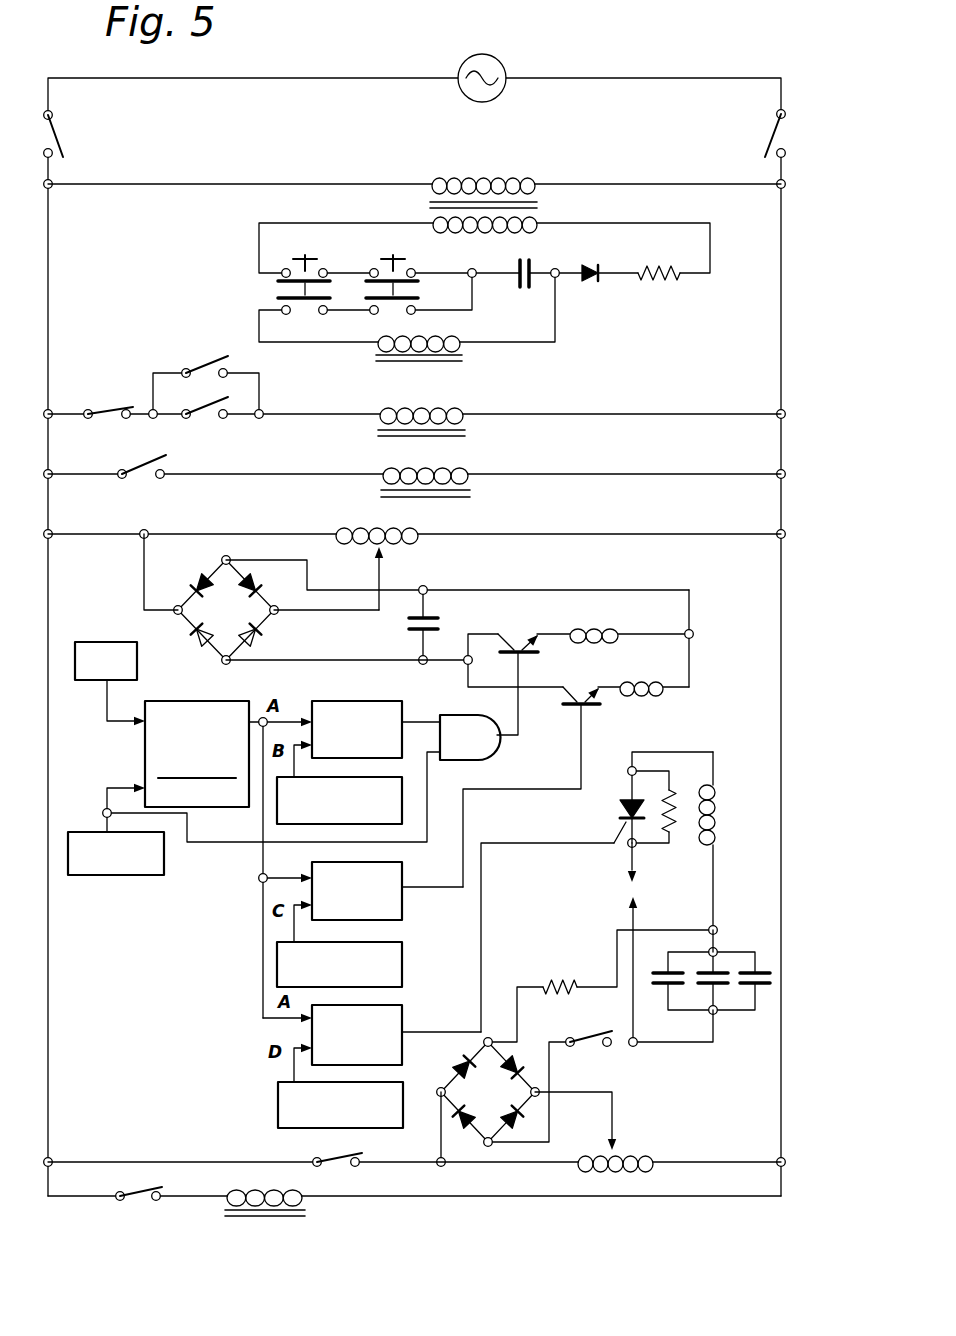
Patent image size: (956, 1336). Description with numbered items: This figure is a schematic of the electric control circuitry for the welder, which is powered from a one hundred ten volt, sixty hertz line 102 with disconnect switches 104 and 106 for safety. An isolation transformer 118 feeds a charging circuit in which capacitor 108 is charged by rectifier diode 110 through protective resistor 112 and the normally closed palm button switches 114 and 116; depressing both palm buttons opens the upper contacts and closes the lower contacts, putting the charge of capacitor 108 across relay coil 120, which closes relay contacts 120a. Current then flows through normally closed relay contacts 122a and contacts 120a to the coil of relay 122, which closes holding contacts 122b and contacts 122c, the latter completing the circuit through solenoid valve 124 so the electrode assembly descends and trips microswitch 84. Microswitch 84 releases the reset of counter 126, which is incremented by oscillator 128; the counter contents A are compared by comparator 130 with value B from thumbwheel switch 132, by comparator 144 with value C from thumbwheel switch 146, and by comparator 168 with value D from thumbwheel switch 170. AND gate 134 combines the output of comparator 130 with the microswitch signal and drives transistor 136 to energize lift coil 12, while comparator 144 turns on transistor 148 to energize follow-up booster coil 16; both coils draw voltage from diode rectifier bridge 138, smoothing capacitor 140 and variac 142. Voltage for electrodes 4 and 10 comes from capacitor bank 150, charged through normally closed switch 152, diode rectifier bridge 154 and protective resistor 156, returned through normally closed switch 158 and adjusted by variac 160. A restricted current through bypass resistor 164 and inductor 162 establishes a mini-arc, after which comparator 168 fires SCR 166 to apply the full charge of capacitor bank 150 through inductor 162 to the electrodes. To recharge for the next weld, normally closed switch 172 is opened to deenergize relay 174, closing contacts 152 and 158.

The 110 volt, 60 hertz line 102 is at (500, 62).
The disconnect switch 104 is at (56, 136).
The disconnect switch 106 is at (766, 132).
The isolation transformer 118 is at (540, 208).
The palm button switch 114 is at (310, 258).
The palm button switch 116 is at (400, 262).
The capacitor 108 is at (535, 288).
The rectifier diode 110 is at (590, 284).
The protective resistor 112 is at (668, 270).
The relay coil 120 is at (465, 353).
The relay contacts 120a is at (206, 358).
The relay contacts 122a is at (132, 405).
The relay contacts 122b is at (212, 425).
The relay contacts 122c is at (132, 466).
The relay 122 is at (466, 410).
The solenoid valve 124 is at (470, 470).
The variac 142 is at (420, 540).
The oscillator 128 is at (100, 636).
The diode rectifier bridge 138 is at (240, 616).
The smoothing capacitor 140 is at (408, 628).
The transistor 136 is at (506, 642).
The counter 126 is at (207, 704).
The comparator 130 is at (351, 702).
The AND gate 134 is at (434, 712).
The thumbwheel switch 132 is at (400, 806).
The transistor 148 is at (564, 700).
The comparator 144 is at (402, 872).
The thumbwheel switch 146 is at (402, 955).
The comparator 168 is at (402, 1022).
The thumbwheel switch 170 is at (278, 1108).
The microswitch 84 is at (76, 878).
The SCR 166 is at (620, 808).
The bypass resistor 164 is at (673, 800).
The inductor 162 is at (722, 826).
The electrode 4 is at (640, 862).
The electrode 10 is at (640, 915).
The capacitor bank 150 is at (735, 945).
The protective resistor 156 is at (538, 974).
The normally closed switch 158 is at (592, 1046).
The diode rectifier bridge 154 is at (503, 1099).
The variac 160 is at (632, 1178).
The normally closed switch 152 is at (335, 1168).
The normally closed switch 172 is at (142, 1184).
The relay 174 is at (234, 1186).
The lift coil 12 is at (592, 640).
The follow-up booster coil 16 is at (663, 712).